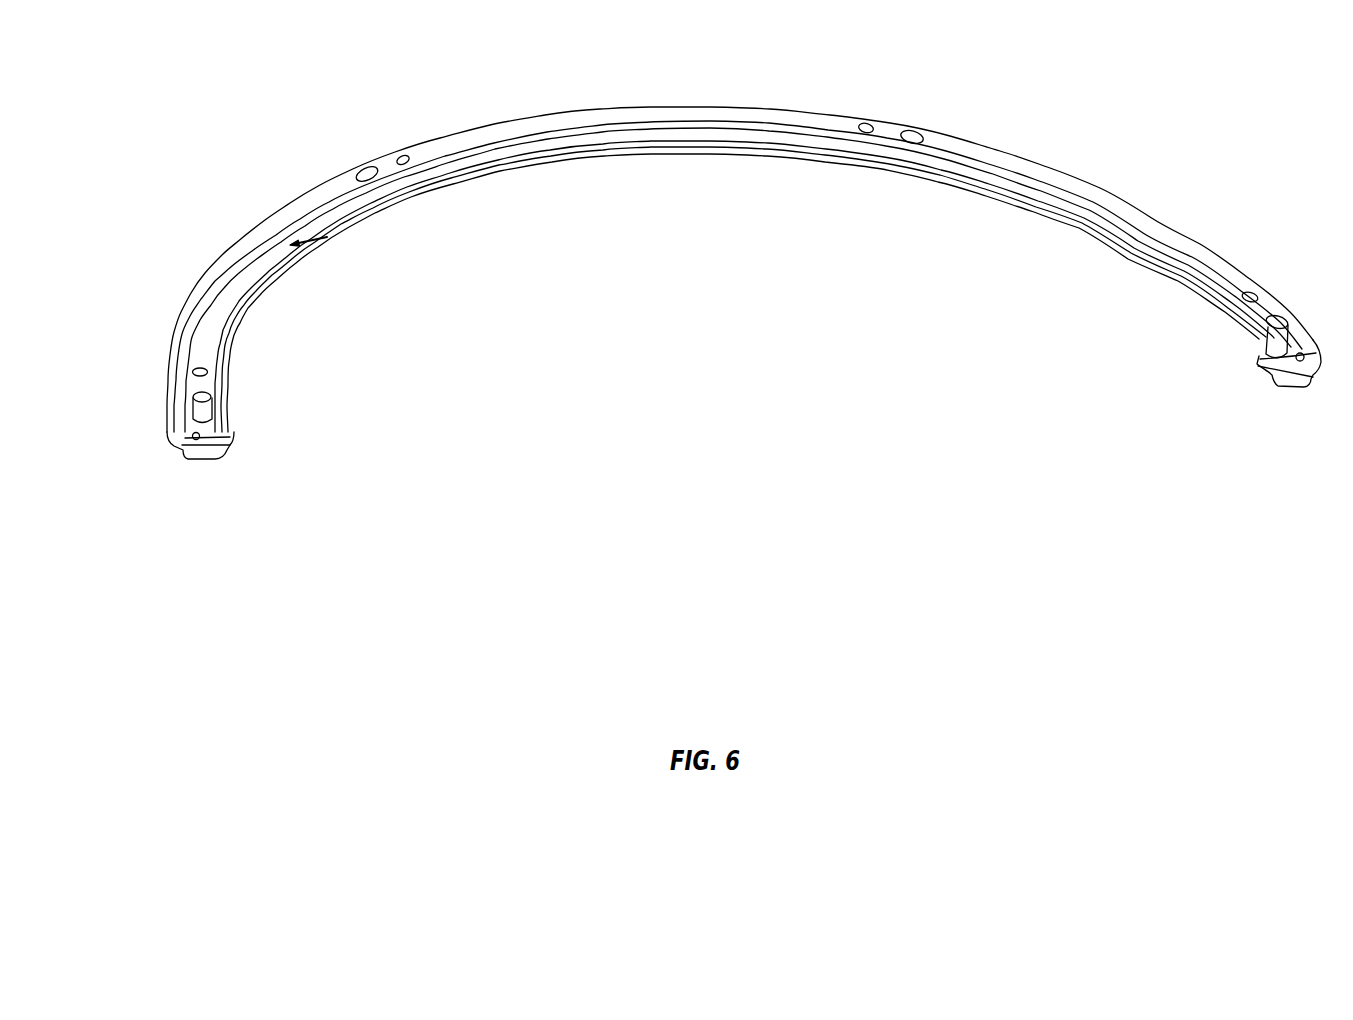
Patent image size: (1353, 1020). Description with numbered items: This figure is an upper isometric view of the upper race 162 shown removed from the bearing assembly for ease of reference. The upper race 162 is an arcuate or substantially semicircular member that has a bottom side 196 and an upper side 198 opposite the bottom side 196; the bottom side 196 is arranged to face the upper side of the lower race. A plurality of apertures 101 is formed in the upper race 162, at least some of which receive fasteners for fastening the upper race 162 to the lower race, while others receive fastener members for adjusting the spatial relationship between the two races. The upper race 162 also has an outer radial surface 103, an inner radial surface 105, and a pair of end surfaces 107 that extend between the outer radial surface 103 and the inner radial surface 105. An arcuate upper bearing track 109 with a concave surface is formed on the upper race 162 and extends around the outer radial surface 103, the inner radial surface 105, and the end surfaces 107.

The upper race 162 is at (717, 274).
The apertures 101 is at (913, 128).
The upper side 198 is at (1052, 182).
The inner radial surface 105 is at (1017, 188).
The bottom side 196 is at (1188, 298).
The outer radial surface 103 is at (187, 320).
The end surfaces 107 is at (194, 436).
The upper bearing track 109 is at (327, 237).